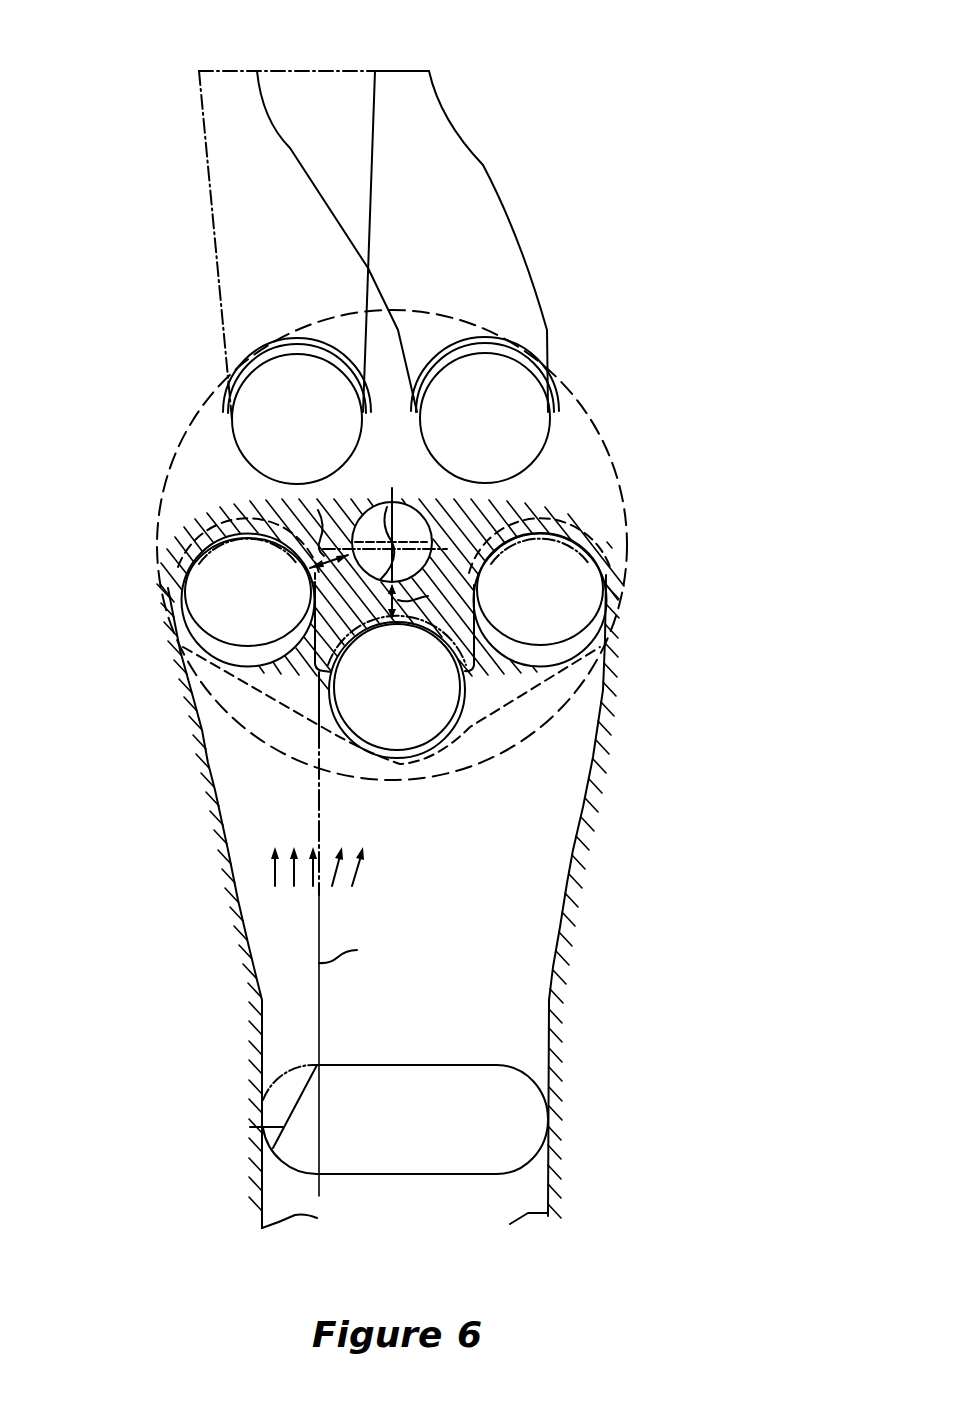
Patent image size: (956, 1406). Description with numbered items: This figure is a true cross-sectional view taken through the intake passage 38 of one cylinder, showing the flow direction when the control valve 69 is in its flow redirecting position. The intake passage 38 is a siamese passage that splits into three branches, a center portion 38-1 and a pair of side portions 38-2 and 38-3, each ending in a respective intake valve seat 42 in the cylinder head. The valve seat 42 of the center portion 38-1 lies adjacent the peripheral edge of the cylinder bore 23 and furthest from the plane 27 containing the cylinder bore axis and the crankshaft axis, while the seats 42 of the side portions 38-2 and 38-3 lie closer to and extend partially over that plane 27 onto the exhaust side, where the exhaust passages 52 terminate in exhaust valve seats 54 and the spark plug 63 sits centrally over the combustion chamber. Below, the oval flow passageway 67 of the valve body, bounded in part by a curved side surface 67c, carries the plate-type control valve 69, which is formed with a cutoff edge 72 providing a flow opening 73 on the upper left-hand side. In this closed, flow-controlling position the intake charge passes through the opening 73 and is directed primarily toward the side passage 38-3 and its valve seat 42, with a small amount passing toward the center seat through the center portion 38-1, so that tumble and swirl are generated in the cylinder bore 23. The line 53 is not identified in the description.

The blade tip line 53 is at (403, 68).
The exhaust passage 52 is at (490, 161).
The cylinder bore 23 is at (163, 497).
The exhaust valve seat 54 is at (246, 463).
The spark plug 63 is at (563, 483).
The intake valve seat 42 is at (197, 628).
The plane 27 is at (377, 587).
The side intake passage portion 38-3 is at (235, 773).
The side intake passage portion 38-2 is at (552, 804).
The center intake passage portion 38-1 is at (434, 862).
The intake passage 38 is at (488, 1034).
The flow passageway 67 is at (534, 1170).
The control valve 69 is at (520, 1123).
The flow opening 73 is at (296, 1083).
The curved side surface 67c is at (270, 1106).
The cutoff edge 72 is at (250, 1127).